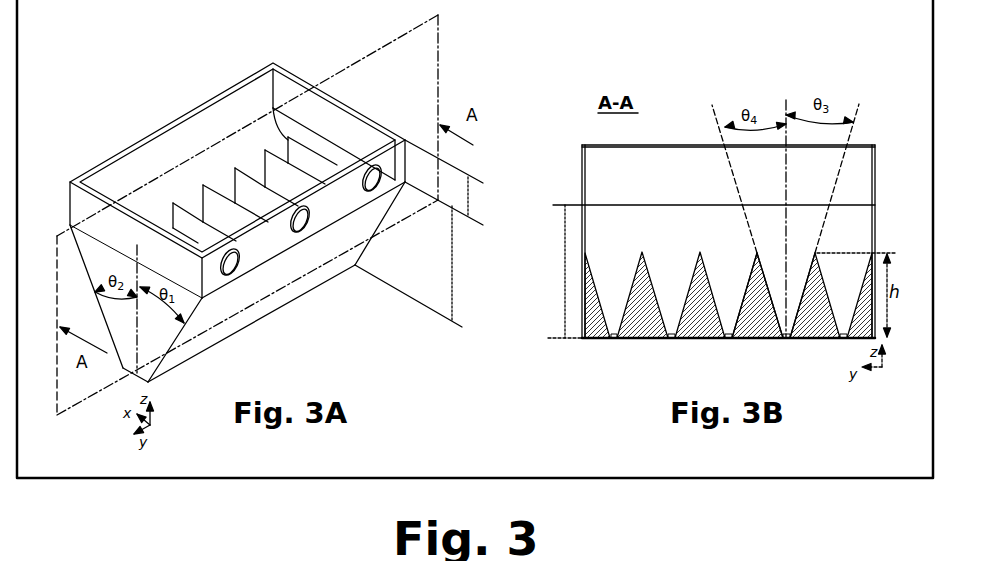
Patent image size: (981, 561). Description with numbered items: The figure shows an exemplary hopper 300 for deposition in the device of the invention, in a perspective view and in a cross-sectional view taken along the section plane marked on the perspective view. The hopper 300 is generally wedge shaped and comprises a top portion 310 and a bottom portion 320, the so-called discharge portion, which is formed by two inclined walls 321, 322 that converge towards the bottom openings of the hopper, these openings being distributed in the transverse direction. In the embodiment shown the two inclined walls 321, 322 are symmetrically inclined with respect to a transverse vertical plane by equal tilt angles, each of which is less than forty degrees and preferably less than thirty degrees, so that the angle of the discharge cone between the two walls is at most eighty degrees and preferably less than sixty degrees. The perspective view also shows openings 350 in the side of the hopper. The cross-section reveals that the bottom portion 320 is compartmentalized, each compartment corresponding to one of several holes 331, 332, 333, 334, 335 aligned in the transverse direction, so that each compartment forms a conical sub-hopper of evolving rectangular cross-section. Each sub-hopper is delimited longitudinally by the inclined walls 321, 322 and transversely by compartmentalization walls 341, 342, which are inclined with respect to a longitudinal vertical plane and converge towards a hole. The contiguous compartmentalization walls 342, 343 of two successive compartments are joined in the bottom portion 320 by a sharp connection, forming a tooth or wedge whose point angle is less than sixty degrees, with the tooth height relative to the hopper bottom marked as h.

In FIG. 3A, the hopper 300 is at (167, 72).
In FIG. 3A, the top portion 310 is at (468, 191).
In FIG. 3A, the bottom portion 320 is at (452, 262).
In FIG. 3B, the bottom portion 320 is at (565, 266).
In FIG. 3A, the inclined wall 321 is at (257, 318).
In FIG. 3A, the inclined wall 322 is at (207, 165).
In FIG. 3A, the openings in side wall 350 is at (300, 234).
In FIG. 3B, the hole 331 is at (614, 340).
In FIG. 3B, the hole 332 is at (671, 340).
In FIG. 3B, the hole 333 is at (728, 340).
In FIG. 3B, the hole 334 is at (786, 340).
In FIG. 3B, the hole 335 is at (843, 340).
In FIG. 3B, the compartmentalization wall 341 is at (802, 272).
In FIG. 3B, the compartmentalization wall 342 is at (763, 275).
In FIG. 3B, the compartmentalization wall 343 is at (748, 281).